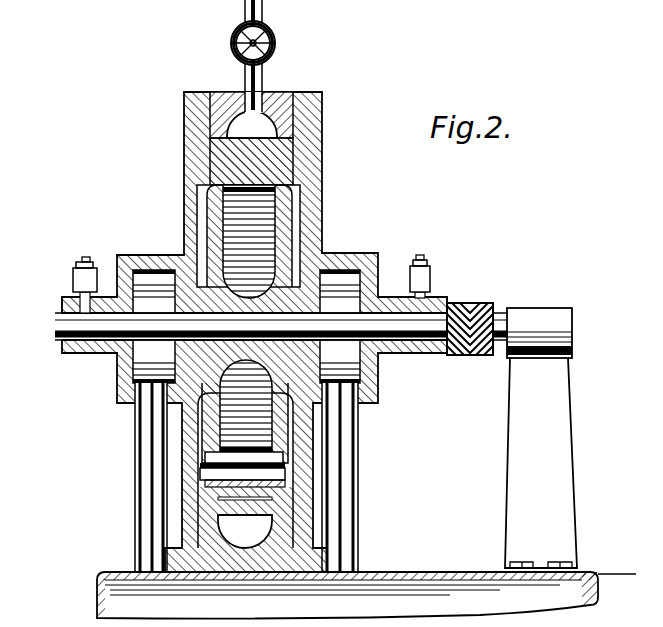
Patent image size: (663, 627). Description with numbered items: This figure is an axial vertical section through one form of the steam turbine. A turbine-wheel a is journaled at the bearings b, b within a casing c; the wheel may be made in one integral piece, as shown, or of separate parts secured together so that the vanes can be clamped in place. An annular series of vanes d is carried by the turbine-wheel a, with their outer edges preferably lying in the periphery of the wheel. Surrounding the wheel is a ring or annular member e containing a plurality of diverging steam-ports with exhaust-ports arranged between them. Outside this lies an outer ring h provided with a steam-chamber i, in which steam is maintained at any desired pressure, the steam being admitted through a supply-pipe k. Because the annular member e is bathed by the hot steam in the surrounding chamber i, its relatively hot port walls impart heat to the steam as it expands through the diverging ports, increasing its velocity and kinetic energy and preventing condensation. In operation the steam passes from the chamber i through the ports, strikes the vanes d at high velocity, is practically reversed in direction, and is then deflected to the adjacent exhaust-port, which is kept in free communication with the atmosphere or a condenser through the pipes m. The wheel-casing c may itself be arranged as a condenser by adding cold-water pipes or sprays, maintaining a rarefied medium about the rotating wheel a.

The turbine-wheel a is at (278, 233).
The journals b is at (60, 310).
The casing c is at (312, 115).
The vanes d is at (207, 195).
The annular member e is at (223, 157).
The outer ring h is at (218, 92).
The steam-chamber i is at (266, 123).
The supply-pipe k is at (262, 13).
The exhaust pipes m is at (145, 460).
The base z is at (366, 595).